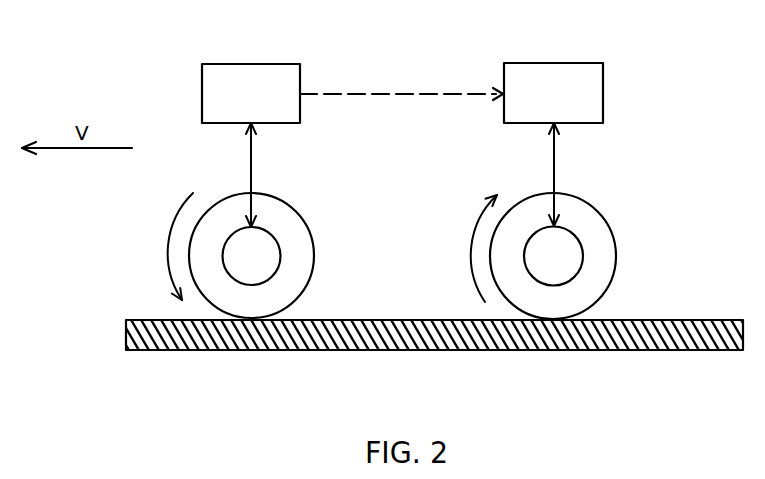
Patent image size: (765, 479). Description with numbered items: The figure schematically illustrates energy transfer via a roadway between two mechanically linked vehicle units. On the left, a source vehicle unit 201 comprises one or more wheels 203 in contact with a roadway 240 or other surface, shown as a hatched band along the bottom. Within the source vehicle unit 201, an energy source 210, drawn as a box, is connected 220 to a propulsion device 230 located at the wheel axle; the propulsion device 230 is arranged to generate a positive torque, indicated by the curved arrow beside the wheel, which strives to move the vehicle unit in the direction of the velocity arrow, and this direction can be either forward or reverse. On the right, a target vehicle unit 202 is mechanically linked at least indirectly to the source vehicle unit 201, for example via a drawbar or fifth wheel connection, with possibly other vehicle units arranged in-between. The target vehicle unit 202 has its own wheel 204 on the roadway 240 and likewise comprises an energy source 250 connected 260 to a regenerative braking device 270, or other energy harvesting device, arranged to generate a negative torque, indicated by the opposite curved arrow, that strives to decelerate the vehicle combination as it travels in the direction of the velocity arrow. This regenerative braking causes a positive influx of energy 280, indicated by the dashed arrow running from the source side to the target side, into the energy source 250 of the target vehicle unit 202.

The source vehicle unit 201 is at (255, 167).
The target vehicle unit 202 is at (593, 167).
The wheels 203 is at (299, 213).
The target wheel 204 is at (616, 267).
The energy source 210 is at (251, 93).
The connection 220 is at (268, 175).
The propulsion device 230 is at (273, 240).
The roadway 240 is at (395, 320).
The energy source 250 is at (553, 93).
The connection 260 is at (534, 174).
The regenerative braking device 270 is at (577, 235).
The positive influx of energy 280 is at (401, 84).